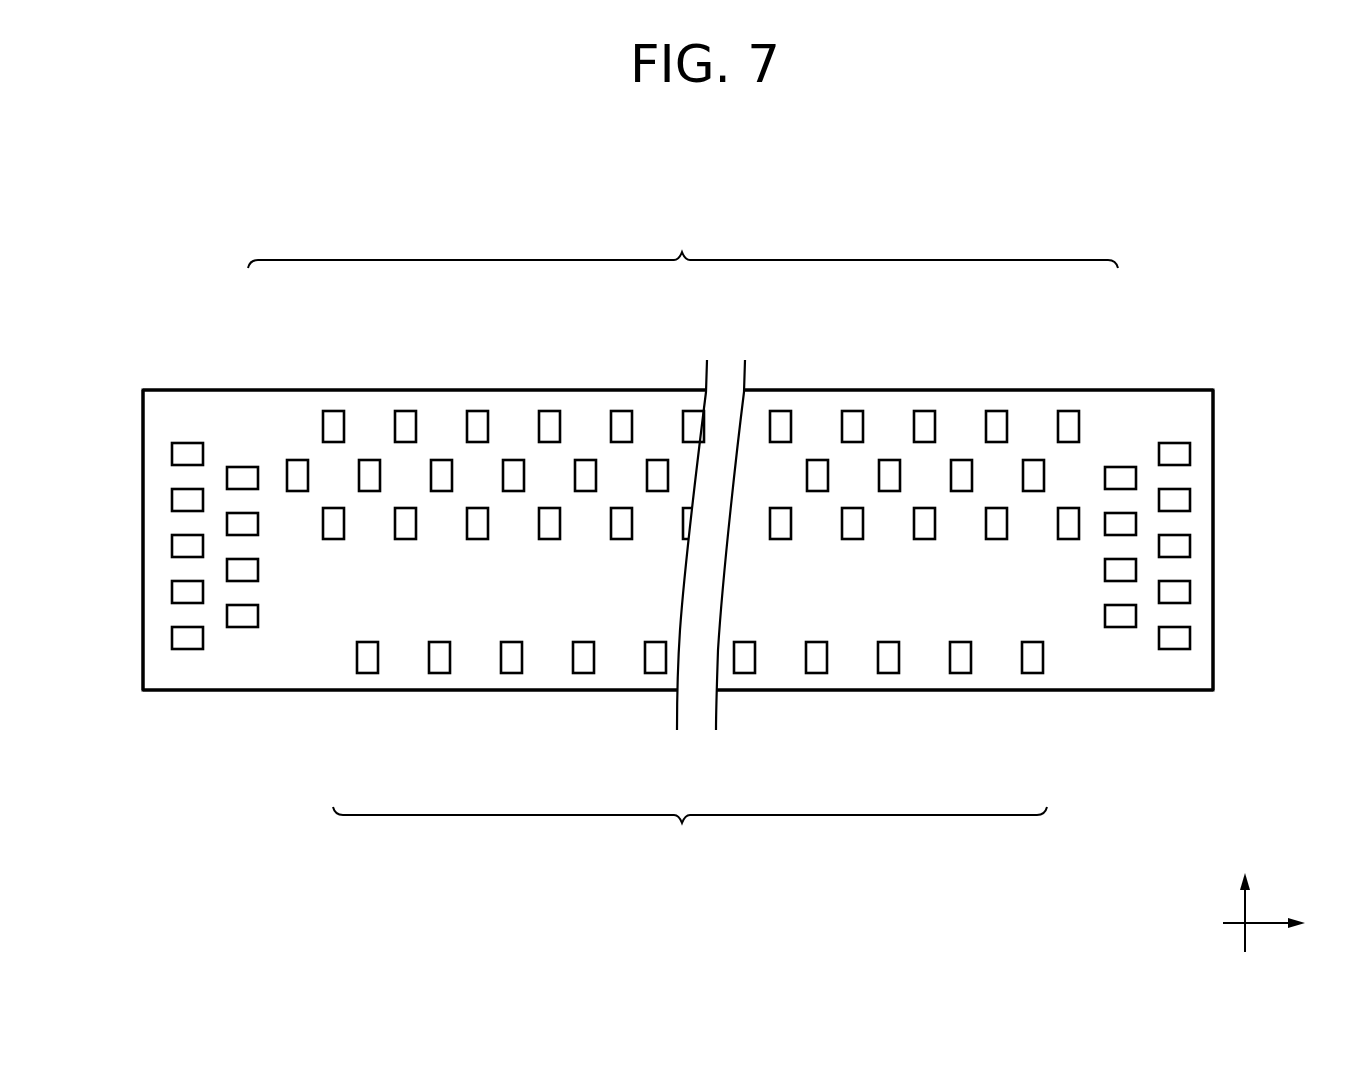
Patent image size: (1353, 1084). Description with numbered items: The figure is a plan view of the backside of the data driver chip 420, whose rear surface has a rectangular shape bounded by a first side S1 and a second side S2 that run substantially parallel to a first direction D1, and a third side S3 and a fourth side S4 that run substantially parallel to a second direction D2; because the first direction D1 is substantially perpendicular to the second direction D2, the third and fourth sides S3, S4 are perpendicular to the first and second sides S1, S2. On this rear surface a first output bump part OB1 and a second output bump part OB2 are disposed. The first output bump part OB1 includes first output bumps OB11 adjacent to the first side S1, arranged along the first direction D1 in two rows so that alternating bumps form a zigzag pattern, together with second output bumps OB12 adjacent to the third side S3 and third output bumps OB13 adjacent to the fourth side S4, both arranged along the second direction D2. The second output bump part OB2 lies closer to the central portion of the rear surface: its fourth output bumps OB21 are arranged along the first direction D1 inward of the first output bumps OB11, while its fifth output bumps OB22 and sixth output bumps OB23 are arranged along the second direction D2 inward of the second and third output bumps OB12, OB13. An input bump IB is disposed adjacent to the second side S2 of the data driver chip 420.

The data driver chip 420 is at (725, 165).
The first output bump part OB1 is at (683, 241).
The first output bumps OB11 is at (560, 426).
The second output bumps OB12 is at (187, 443).
The third output bumps OB13 is at (1174, 443).
The second output bump part OB2 is at (690, 835).
The fourth output bumps OB21 is at (477, 540).
The fifth output bumps OB22 is at (257, 615).
The sixth output bumps OB23 is at (1105, 616).
The input bump IB is at (897, 660).
The first side S1 is at (841, 390).
The second side S2 is at (844, 690).
The third side S3 is at (143, 557).
The fourth side S4 is at (1213, 558).
The first direction D1 is at (1280, 917).
The second direction D2 is at (1244, 893).